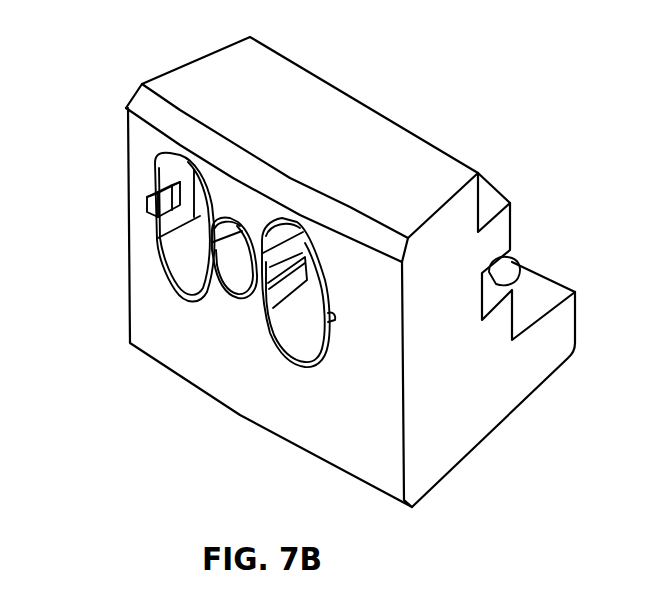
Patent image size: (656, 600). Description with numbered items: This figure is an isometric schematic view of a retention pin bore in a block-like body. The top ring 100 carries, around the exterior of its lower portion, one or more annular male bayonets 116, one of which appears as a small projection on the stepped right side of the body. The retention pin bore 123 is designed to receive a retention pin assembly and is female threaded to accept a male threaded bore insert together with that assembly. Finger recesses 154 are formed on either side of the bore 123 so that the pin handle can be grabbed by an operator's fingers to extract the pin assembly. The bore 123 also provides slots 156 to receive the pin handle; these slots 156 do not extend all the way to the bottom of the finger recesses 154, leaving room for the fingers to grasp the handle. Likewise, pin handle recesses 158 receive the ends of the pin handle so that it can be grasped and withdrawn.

The top ring 100 is at (432, 402).
The annular male bayonet 116 is at (497, 287).
The retention pin bore 123 is at (247, 283).
The finger recess 154 is at (190, 277).
The slot 156 is at (226, 240).
The pin handle recess 158 is at (152, 209).